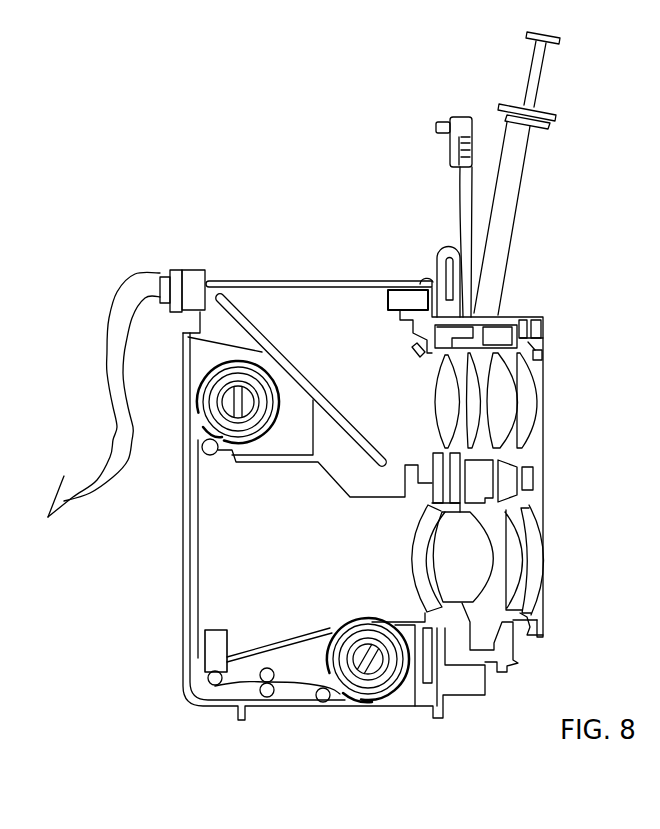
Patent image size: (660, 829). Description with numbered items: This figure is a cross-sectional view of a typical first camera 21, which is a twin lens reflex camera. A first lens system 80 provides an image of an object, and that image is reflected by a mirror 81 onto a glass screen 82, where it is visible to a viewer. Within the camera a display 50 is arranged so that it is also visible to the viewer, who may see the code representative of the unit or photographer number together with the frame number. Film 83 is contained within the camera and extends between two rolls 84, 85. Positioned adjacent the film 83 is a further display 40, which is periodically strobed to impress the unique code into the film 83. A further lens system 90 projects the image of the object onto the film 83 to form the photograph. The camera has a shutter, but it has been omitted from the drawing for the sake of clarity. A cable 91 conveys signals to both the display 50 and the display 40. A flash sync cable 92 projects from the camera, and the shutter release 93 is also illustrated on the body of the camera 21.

The camera 21 is at (266, 185).
The display 40 is at (218, 645).
The display 50 is at (388, 298).
The first lens system 80 is at (528, 399).
The mirror 81 is at (297, 375).
The glass screen 82 is at (303, 282).
The film 83 is at (192, 535).
The roll 84 is at (200, 388).
The roll 85 is at (347, 632).
The further lens system 90 is at (535, 571).
The cable 91 is at (110, 343).
The flash sync cable 92 is at (461, 207).
The shutter release 93 is at (511, 217).